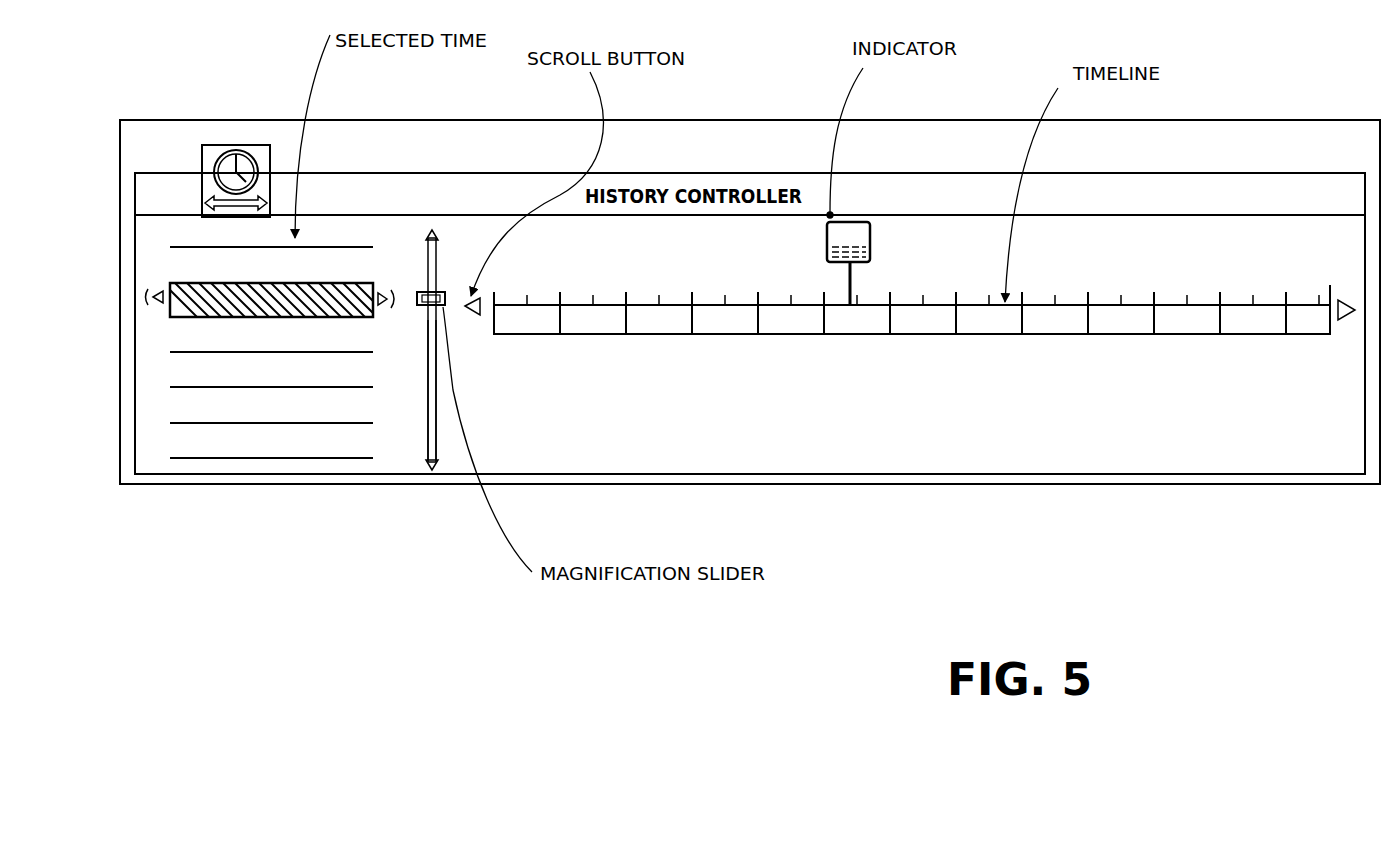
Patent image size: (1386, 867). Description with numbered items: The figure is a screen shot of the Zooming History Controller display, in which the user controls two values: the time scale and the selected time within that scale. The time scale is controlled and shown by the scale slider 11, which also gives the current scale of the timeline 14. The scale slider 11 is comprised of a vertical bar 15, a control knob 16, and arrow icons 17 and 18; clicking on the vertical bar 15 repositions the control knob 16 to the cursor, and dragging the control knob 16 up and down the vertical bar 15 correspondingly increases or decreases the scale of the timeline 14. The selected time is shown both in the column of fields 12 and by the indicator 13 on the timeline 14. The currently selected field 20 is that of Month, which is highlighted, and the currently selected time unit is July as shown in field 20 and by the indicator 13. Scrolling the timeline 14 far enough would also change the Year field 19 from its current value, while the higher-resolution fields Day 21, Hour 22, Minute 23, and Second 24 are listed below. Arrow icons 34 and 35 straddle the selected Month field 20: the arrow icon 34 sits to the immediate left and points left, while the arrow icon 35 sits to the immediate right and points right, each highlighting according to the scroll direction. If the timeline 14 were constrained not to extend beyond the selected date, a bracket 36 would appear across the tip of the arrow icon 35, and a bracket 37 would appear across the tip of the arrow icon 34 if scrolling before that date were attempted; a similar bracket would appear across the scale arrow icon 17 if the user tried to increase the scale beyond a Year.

The scale slider 11 is at (476, 321).
The column of fields 12 is at (178, 246).
The indicator 13 is at (871, 243).
The timeline 14 is at (990, 334).
The vertical bar 15 is at (441, 428).
The control knob 16 is at (448, 297).
The arrow icon 17 is at (435, 232).
The arrow icon 18 is at (422, 465).
The Year field 19 is at (156, 296).
The Month field 20 is at (170, 316).
The Day field 21 is at (170, 342).
The Hour field 22 is at (170, 377).
The Minute field 23 is at (170, 412).
The Second field 24 is at (170, 448).
The arrow icon 34 is at (170, 268).
The arrow icon 35 is at (389, 290).
The bracket 36 is at (397, 297).
The bracket 37 is at (143, 297).